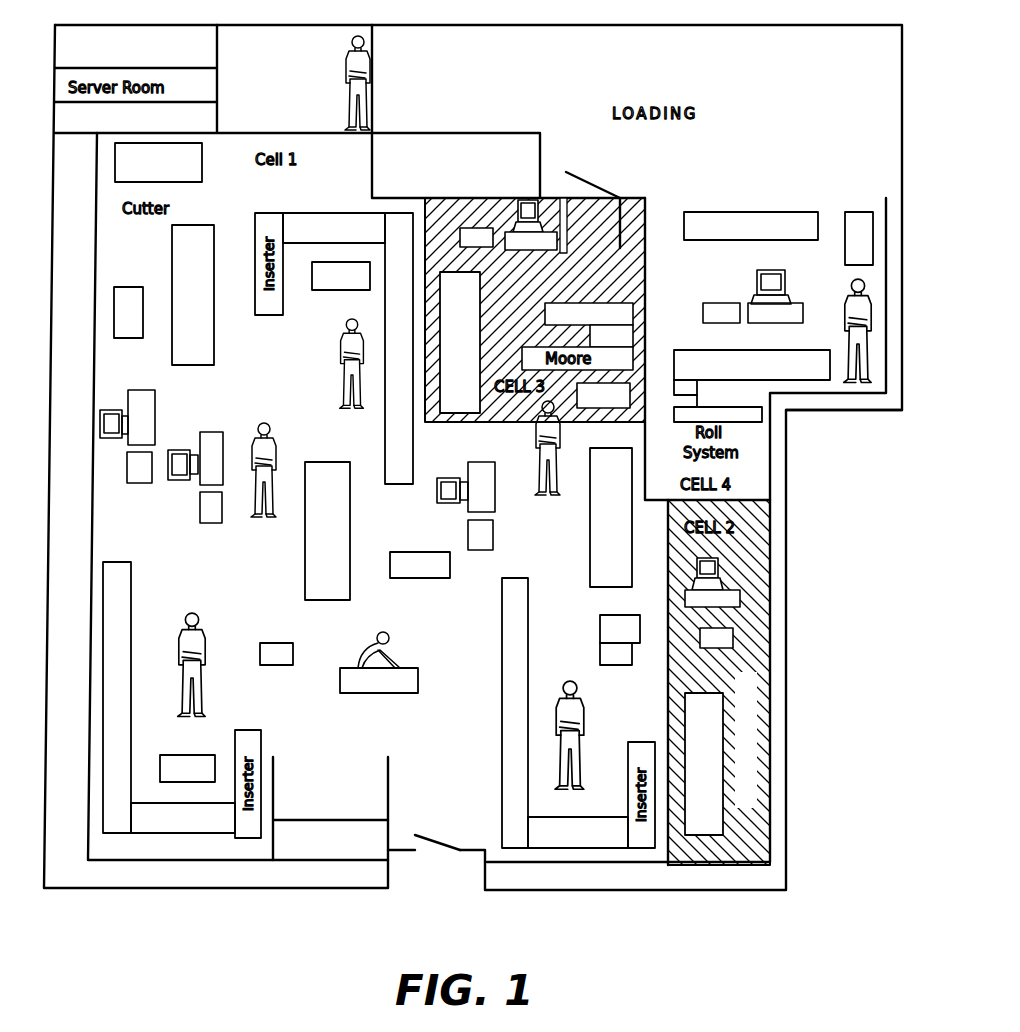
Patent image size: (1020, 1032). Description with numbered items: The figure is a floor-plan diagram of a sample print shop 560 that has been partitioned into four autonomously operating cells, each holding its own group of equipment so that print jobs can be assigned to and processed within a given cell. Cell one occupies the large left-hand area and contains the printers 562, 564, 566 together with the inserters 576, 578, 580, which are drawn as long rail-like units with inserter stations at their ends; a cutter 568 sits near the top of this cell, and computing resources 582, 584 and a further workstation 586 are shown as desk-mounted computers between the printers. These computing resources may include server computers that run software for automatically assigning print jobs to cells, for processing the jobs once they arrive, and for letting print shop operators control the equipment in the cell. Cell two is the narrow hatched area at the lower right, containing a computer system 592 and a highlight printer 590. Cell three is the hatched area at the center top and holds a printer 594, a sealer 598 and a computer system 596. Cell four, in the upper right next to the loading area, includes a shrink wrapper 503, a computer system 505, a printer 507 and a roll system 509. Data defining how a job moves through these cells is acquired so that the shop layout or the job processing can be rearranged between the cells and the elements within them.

The document production facility 560 is at (68, 889).
The printer 562 is at (214, 360).
The printer 564 is at (305, 552).
The printer 566 is at (590, 532).
The cutter 568 is at (185, 182).
The inserter 576 is at (394, 484).
The inserter 578 is at (133, 596).
The inserter 580 is at (510, 612).
The computing resource 582 is at (117, 410).
The computing resource 584 is at (186, 447).
The computer workstation 586 is at (452, 478).
The highlight printer 590 is at (694, 706).
The computer system 592 is at (726, 584).
The printer 594 is at (482, 291).
The computer system 596 is at (520, 198).
The sealer 598 is at (605, 303).
The shrink wrapper 503 is at (729, 241).
The computer system 505 is at (785, 284).
The printer 507 is at (720, 350).
The roll system 509 is at (763, 416).